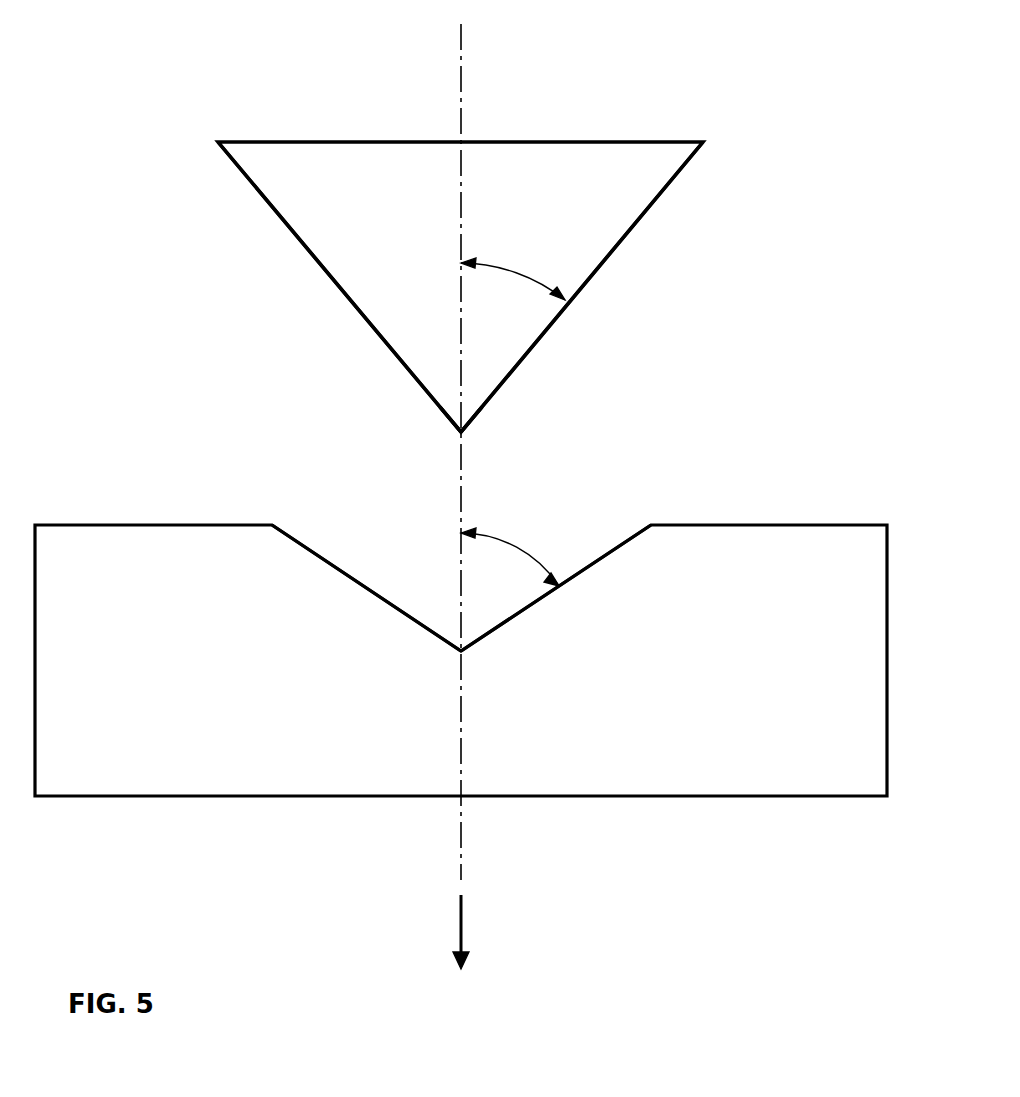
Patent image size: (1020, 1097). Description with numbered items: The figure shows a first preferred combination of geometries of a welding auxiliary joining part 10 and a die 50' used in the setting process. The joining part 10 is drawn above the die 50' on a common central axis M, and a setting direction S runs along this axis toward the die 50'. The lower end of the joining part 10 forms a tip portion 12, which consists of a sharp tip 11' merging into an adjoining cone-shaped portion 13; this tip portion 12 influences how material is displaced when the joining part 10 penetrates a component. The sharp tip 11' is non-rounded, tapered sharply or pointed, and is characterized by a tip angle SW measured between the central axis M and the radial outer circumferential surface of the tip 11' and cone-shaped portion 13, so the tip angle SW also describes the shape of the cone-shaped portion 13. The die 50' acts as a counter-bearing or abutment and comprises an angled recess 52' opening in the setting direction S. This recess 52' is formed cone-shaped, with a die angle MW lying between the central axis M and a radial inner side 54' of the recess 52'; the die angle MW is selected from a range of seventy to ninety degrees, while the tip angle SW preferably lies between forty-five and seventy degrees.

The central axis M is at (462, 39).
The setting direction S is at (461, 925).
The welding auxiliary joining part 10 is at (579, 205).
The sharp tip 11' is at (433, 459).
The tip portion 12 is at (653, 313).
The cone-shaped portion 13 is at (350, 300).
The tip angle SW is at (518, 273).
The die 50' is at (461, 660).
The angled recess 52' is at (366, 589).
The radial inner side 54' is at (556, 552).
The die angle MW is at (522, 548).